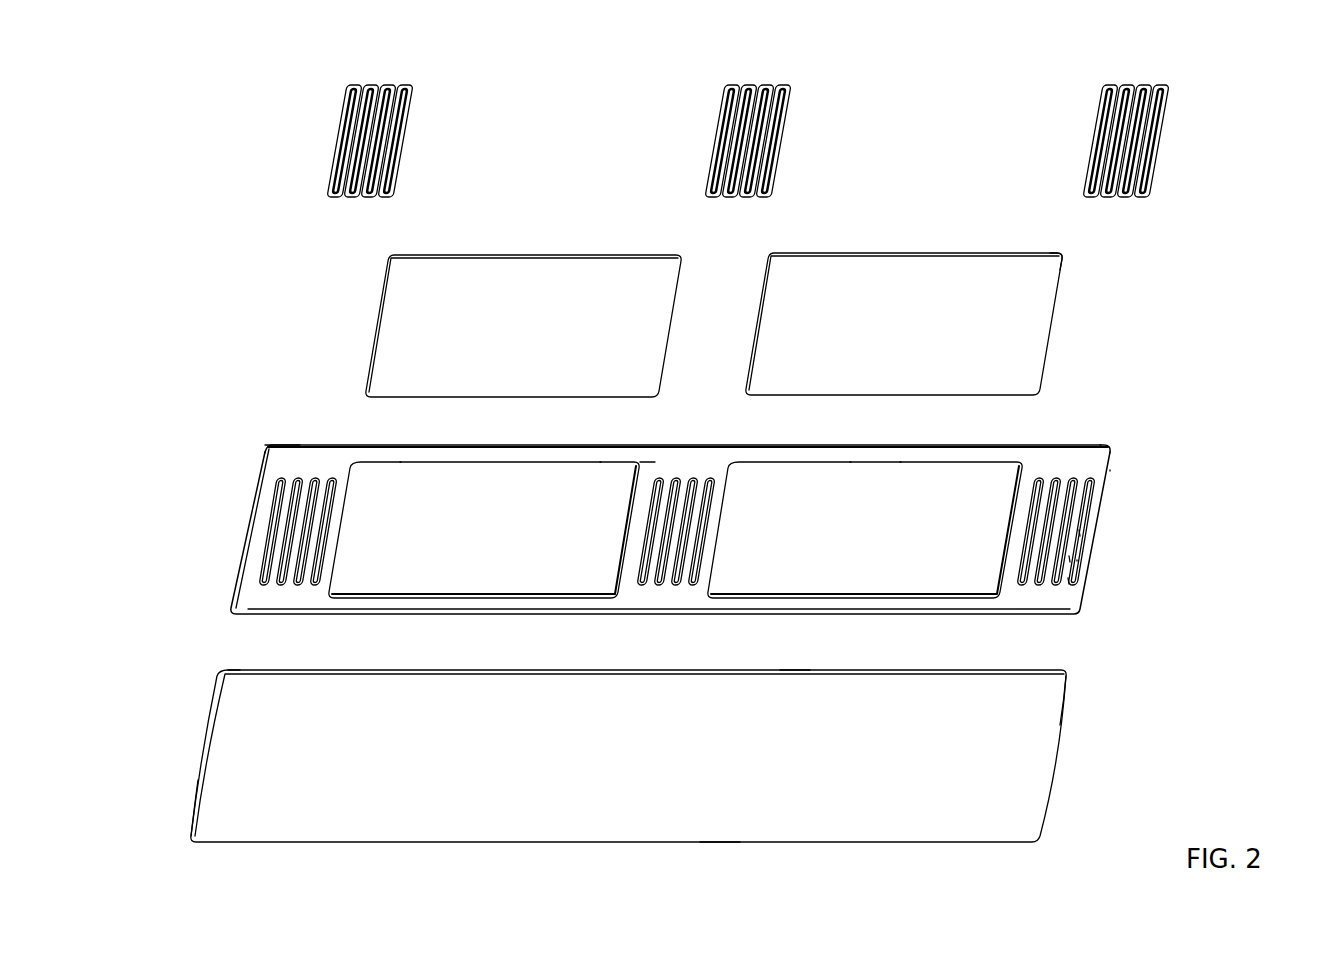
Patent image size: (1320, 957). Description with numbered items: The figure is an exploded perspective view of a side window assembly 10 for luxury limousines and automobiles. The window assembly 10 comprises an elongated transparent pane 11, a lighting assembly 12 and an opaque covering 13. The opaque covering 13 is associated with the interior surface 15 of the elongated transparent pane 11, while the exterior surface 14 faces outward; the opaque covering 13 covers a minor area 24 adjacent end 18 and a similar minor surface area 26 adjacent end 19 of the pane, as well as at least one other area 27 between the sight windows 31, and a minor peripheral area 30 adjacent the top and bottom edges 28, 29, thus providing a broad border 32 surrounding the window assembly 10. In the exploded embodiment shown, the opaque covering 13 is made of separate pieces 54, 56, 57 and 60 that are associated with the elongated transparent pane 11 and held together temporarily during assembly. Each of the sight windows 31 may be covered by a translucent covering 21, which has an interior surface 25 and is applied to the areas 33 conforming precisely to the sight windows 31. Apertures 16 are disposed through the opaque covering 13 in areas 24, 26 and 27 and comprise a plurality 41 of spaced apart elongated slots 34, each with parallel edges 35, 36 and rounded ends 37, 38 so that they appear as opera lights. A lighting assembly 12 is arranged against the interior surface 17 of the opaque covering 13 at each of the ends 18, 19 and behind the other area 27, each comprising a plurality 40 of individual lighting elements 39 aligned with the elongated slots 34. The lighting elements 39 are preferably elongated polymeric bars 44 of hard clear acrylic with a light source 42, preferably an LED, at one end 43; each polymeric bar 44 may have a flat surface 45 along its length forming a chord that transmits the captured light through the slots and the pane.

The window assembly 10 is at (226, 246).
The elongated transparent pane 11 is at (1016, 769).
The lighting assembly 12 is at (350, 92).
The opaque covering 13 is at (257, 461).
The exterior surface 14 is at (352, 788).
The interior surface 15 is at (258, 668).
The aperture 16 is at (721, 504).
The interior surface 17 is at (252, 492).
The end 18 is at (1062, 714).
The end 19 is at (199, 778).
The translucent covering 21 is at (915, 270).
The minor area 24 is at (1092, 456).
The interior surface 25 is at (1040, 250).
The minor surface area 26 is at (233, 609).
The other area 27 is at (686, 470).
The top edge 28 is at (796, 670).
The bottom edge 29 is at (714, 843).
The minor peripheral area 30 is at (931, 458).
The sight window 31 is at (516, 478).
The broad border 32 is at (447, 458).
The area 33 is at (476, 555).
The elongated slot 34 is at (281, 547).
The parallel edge 35 is at (1080, 534).
The parallel edge 36 is at (1070, 560).
The rounded end 37 is at (1069, 582).
The rounded end 38 is at (1096, 480).
The lighting element 39 is at (718, 177).
The plurality of lighting elements 40 is at (720, 135).
The plurality of elongated slots 41 is at (1202, 488).
The light source 42 is at (750, 92).
The end 43 is at (755, 119).
The elongated polymeric bar 44 is at (727, 129).
The flat surface 45 is at (330, 166).
The separate piece 54 is at (1070, 458).
The separate piece 56 is at (290, 460).
The separate piece 57 is at (656, 463).
The separate piece 60 is at (848, 458).